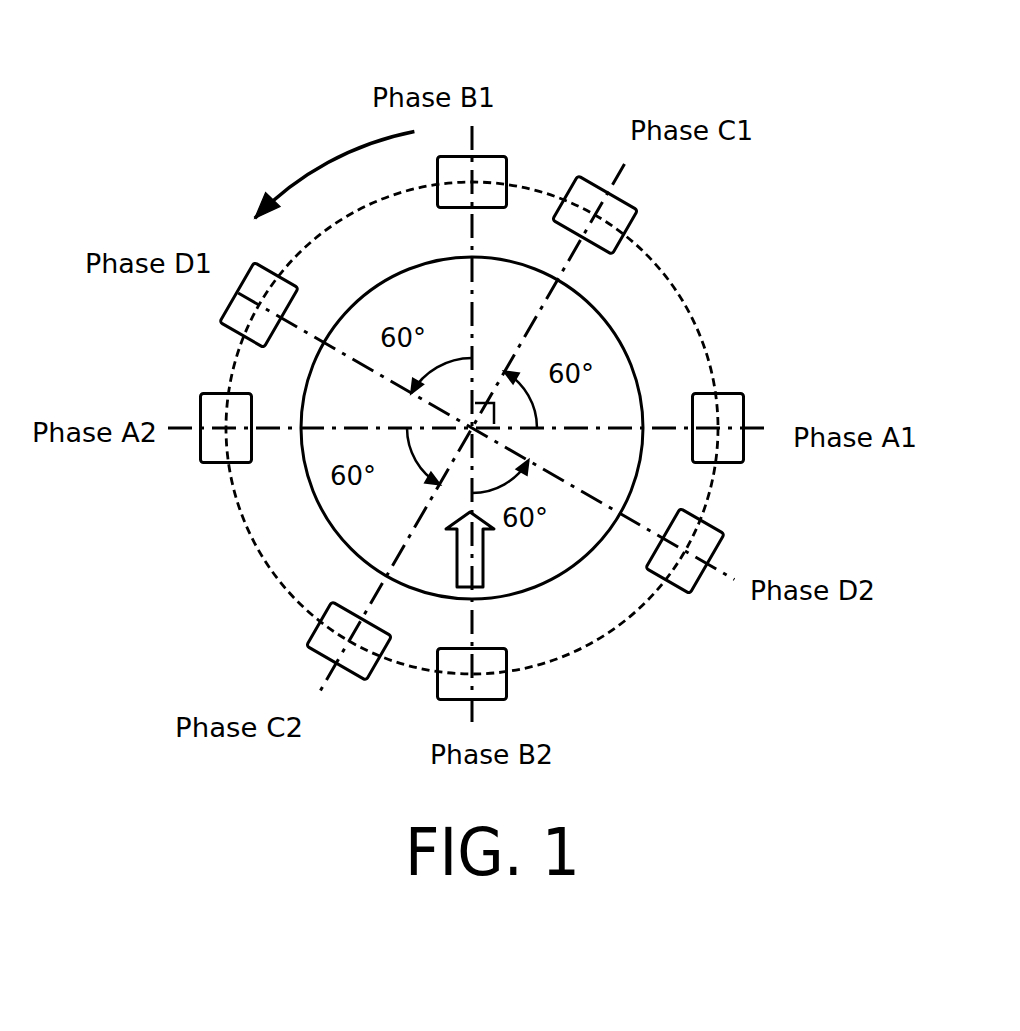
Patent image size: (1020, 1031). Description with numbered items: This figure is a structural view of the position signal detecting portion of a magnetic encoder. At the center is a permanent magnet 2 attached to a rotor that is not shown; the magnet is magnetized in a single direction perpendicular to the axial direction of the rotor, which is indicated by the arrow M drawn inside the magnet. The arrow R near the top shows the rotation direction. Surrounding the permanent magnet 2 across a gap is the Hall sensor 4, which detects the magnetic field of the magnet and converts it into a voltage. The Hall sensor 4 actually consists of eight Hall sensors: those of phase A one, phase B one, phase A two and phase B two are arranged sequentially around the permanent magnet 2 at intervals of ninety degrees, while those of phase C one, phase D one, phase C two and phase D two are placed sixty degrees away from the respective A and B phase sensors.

The permanent magnet 2 is at (615, 330).
The Hall sensor 4 is at (506, 141).
The arrow M is at (485, 573).
The arrow R is at (335, 154).